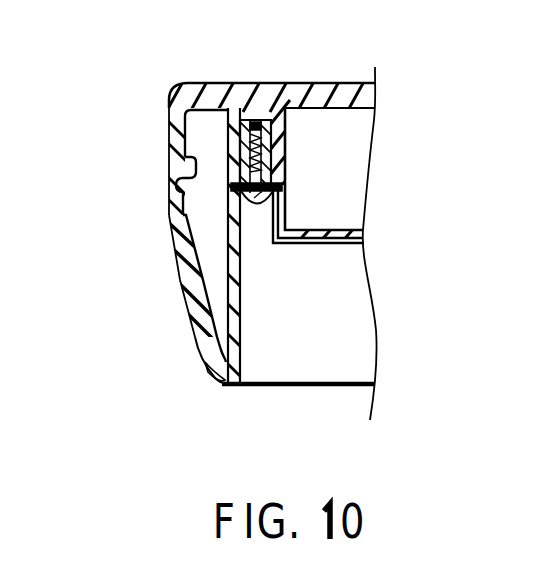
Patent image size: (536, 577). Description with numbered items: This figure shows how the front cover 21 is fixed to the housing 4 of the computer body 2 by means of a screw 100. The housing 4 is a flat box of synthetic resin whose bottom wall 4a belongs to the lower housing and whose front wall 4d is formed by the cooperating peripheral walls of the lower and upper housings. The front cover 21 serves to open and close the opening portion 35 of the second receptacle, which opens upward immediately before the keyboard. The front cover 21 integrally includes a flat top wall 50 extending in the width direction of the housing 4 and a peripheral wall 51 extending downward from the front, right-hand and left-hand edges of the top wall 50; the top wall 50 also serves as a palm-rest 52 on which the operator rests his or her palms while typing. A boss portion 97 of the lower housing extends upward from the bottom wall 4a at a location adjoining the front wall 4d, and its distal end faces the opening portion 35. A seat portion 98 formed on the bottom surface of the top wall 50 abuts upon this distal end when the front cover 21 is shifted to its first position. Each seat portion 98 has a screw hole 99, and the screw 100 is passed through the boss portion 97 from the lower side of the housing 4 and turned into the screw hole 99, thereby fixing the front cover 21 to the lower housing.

The computer body 2 is at (228, 387).
The housing 4 is at (194, 353).
The bottom wall 4a is at (332, 243).
The front wall 4d is at (193, 290).
The front cover 21 is at (372, 92).
The opening portion 35 is at (170, 153).
The top wall 50 is at (352, 83).
The peripheral wall 51 is at (169, 122).
The palm-rest 52 is at (303, 106).
The boss portion 97 is at (279, 194).
The seat portion 98 is at (278, 147).
The screw hole 99 is at (249, 120).
The screw 100 is at (257, 194).